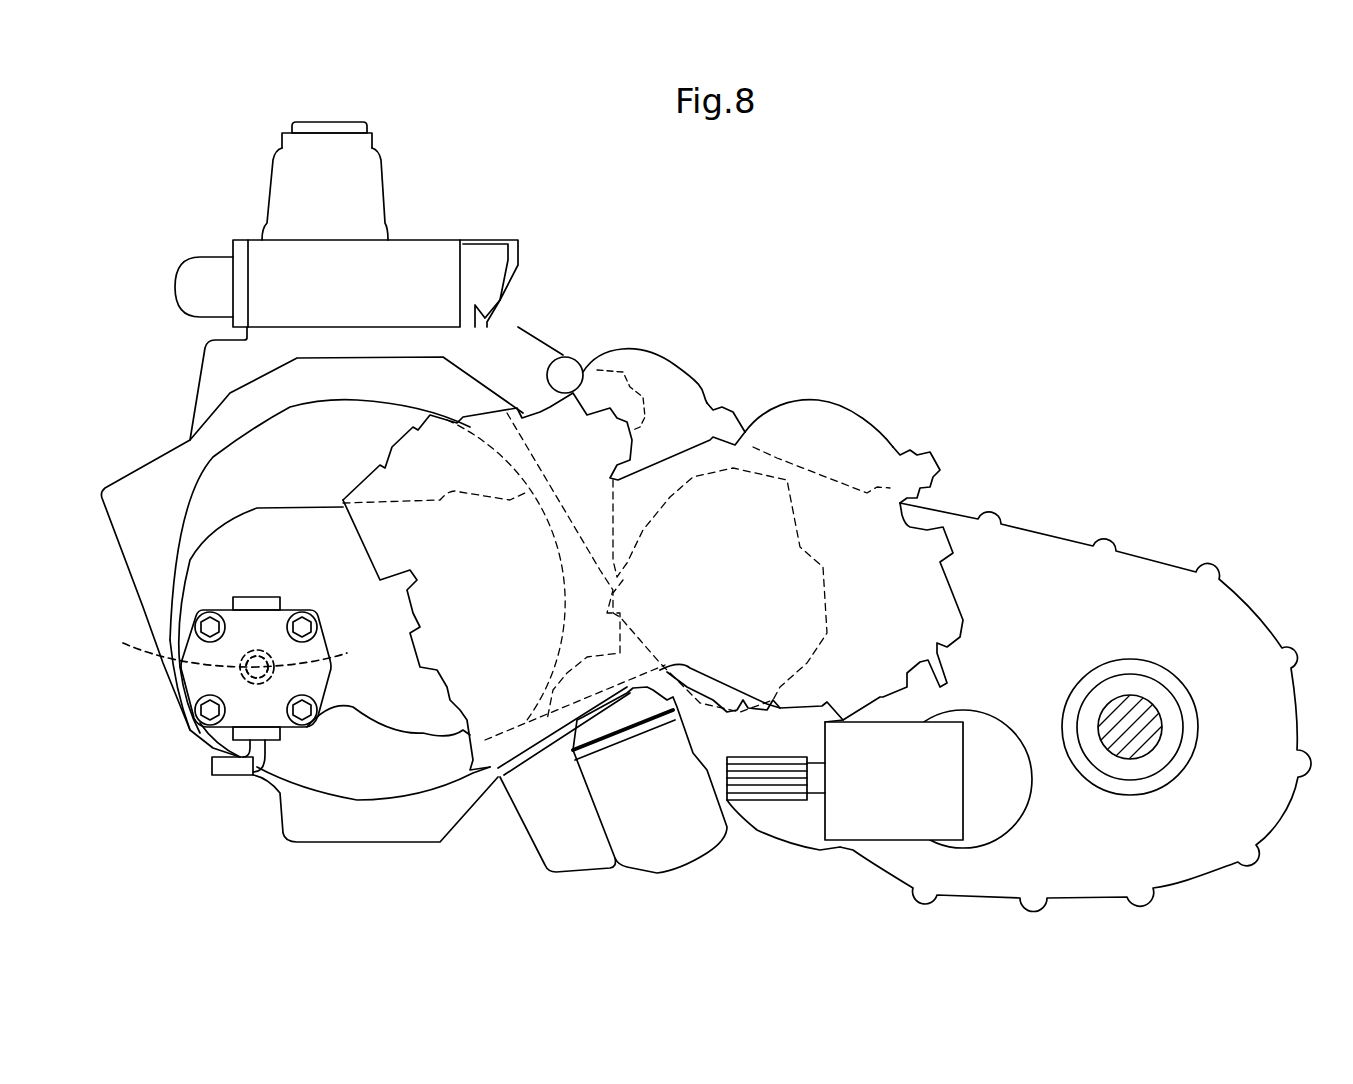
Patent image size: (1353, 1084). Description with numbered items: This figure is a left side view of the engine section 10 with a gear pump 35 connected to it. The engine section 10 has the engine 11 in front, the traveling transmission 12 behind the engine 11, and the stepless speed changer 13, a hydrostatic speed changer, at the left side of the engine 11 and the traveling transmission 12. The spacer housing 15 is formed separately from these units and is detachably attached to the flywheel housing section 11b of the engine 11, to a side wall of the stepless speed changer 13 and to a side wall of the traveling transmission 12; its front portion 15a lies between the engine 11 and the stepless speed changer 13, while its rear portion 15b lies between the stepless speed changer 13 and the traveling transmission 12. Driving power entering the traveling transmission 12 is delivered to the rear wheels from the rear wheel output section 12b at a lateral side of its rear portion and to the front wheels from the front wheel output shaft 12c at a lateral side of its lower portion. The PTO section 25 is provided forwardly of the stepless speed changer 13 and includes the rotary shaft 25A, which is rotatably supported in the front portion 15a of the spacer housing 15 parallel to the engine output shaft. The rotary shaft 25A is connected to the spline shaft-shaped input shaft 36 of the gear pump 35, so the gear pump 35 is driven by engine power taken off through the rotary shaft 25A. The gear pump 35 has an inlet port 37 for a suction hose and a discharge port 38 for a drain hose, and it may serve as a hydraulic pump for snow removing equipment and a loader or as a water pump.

The engine section 10 is at (760, 330).
The engine 11 is at (217, 387).
The flywheel housing section 11b is at (357, 407).
The traveling transmission 12 is at (1047, 532).
The rear wheel output section 12b is at (1137, 728).
The front wheel output shaft 12c is at (763, 803).
The stepless speed changer 13 is at (683, 447).
The spacer housing 15 is at (632, 368).
The front portion of the spacer housing 15a is at (313, 500).
The rear portion of the spacer housing 15b is at (717, 697).
The PTO section 25 is at (325, 672).
The rotary shaft 25A is at (321, 659).
The gear pump 35 is at (210, 683).
The input shaft 36 is at (222, 648).
The inlet port 37 is at (258, 600).
The discharge port 38 is at (227, 776).